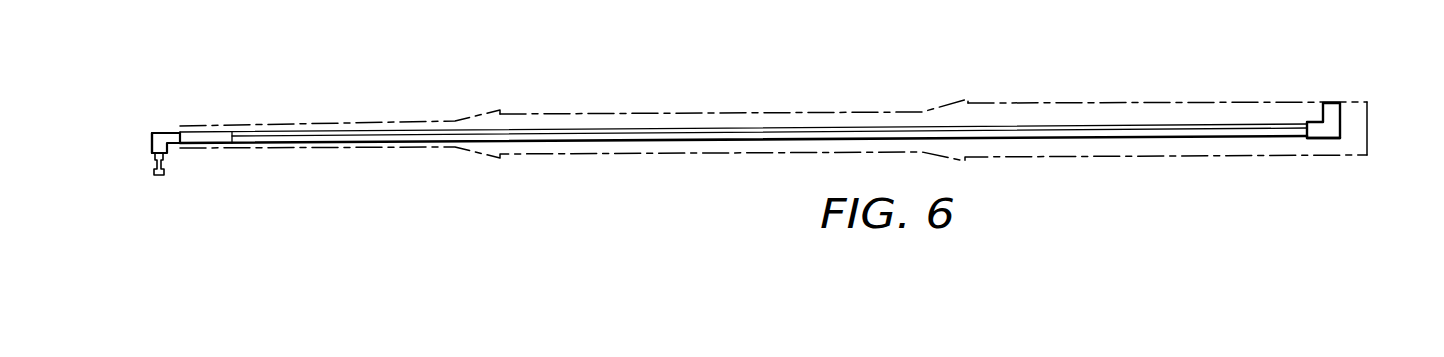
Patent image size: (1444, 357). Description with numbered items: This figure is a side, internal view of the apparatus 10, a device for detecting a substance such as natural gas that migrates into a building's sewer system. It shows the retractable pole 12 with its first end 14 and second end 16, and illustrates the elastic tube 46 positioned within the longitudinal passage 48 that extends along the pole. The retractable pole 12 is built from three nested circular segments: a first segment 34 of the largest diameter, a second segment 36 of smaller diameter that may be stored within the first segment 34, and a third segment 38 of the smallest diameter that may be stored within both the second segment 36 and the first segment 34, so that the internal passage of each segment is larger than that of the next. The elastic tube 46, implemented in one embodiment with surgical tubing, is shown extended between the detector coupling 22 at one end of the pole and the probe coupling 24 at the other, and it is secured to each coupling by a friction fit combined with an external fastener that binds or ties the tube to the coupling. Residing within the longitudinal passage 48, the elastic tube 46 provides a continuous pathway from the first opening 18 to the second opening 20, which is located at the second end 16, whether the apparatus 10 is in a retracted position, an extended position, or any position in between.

The apparatus 10 is at (328, 246).
The retractable pole 12 is at (729, 162).
The first end 14 is at (1367, 128).
The second end 16 is at (178, 148).
The first opening 18 is at (1331, 102).
The second opening 20 is at (178, 133).
The detector coupling 22 is at (1324, 150).
The probe coupling 24 is at (143, 142).
The first segment 34 is at (1200, 102).
The second segment 36 is at (815, 113).
The third segment 38 is at (320, 123).
The elastic tube 46 is at (1064, 138).
The longitudinal passage 48 is at (610, 124).